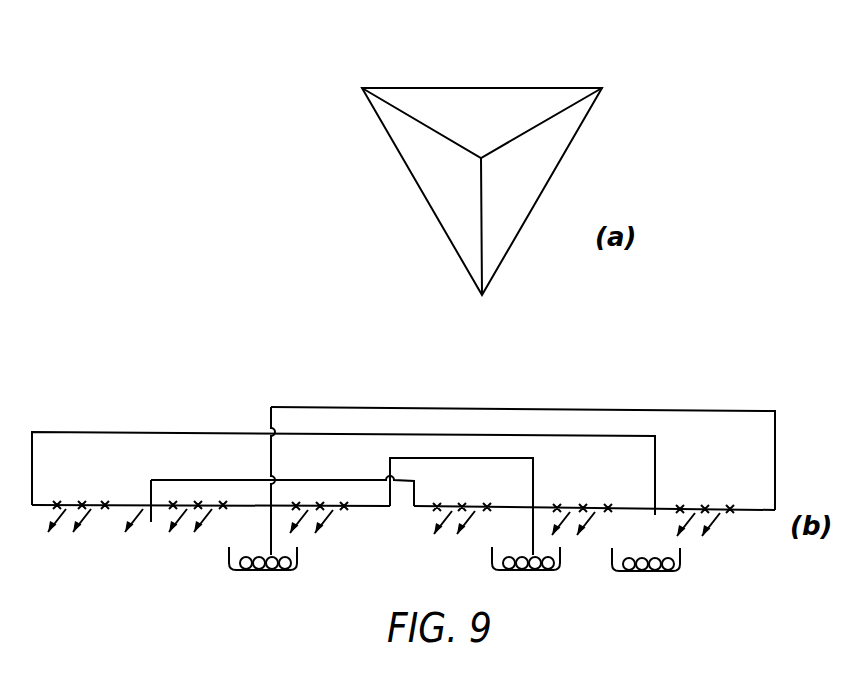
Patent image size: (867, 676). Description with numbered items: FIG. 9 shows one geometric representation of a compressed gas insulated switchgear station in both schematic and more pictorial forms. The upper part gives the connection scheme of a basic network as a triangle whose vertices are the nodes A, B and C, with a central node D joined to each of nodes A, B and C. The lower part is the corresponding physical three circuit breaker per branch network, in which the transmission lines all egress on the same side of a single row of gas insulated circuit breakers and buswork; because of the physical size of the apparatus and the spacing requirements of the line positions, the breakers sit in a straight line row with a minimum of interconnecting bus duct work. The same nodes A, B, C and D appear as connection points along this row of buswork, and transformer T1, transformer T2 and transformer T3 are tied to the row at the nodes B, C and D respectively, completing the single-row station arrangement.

The node A is at (362, 88).
The node B is at (602, 88).
The node C is at (482, 295).
The node D is at (481, 158).
The transformer T1 is at (243, 572).
The transformer T2 is at (547, 572).
The transformer T3 is at (658, 573).